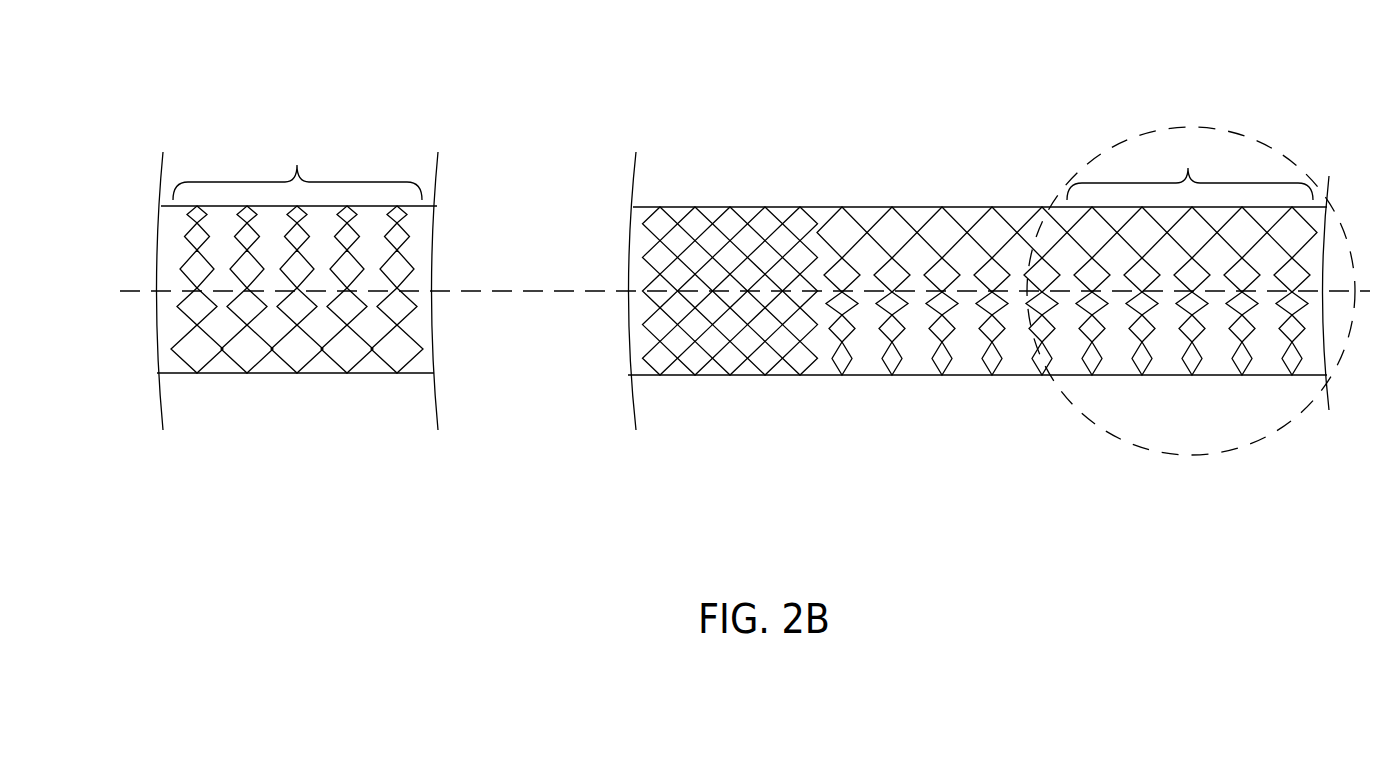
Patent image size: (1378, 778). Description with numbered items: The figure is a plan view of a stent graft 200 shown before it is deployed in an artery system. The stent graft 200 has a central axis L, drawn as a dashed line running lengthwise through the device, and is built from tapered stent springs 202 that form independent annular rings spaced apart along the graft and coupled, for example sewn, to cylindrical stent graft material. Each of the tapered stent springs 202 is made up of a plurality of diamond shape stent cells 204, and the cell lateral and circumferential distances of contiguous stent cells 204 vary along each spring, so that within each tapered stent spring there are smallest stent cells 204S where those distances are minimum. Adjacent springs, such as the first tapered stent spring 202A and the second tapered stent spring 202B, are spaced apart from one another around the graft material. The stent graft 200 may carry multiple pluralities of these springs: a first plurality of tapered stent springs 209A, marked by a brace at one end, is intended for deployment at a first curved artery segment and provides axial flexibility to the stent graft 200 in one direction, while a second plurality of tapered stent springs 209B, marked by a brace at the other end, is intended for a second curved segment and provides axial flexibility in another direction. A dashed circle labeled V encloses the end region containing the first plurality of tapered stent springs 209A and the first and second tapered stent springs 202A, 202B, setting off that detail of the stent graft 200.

The stent graft 200 is at (759, 162).
The tapered stent springs 202 is at (266, 368).
The diamond shape stent cells 204 is at (300, 355).
The smallest stent cells 204S is at (240, 214).
The first plurality of tapered stent springs 209A is at (1192, 255).
The second plurality of tapered stent springs 209B is at (298, 281).
The first tapered stent spring 202A is at (1217, 348).
The second tapered stent spring 202B is at (1272, 332).
The central axis L is at (543, 290).
The detail view V is at (1236, 133).